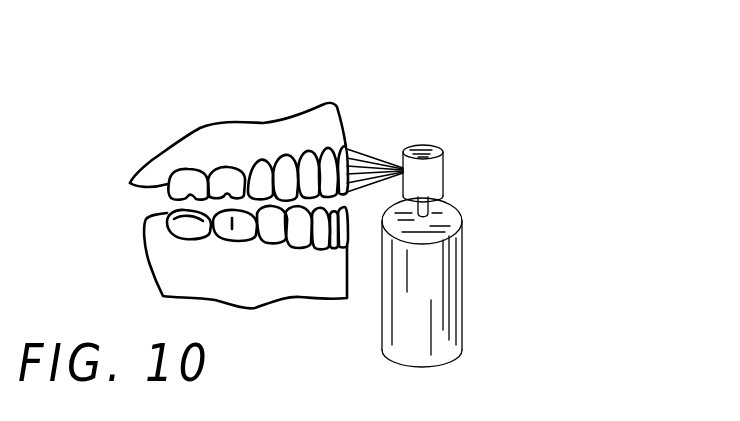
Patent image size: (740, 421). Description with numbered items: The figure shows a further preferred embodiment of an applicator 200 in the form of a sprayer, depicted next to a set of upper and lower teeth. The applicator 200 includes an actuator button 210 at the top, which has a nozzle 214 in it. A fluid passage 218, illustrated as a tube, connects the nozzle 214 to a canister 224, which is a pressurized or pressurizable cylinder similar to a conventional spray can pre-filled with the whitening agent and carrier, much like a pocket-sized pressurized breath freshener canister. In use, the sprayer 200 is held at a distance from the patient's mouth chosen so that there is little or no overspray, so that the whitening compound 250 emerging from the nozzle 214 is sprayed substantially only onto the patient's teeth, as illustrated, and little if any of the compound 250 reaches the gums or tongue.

The whitening compound 250 is at (358, 160).
The nozzle 214 is at (395, 160).
The actuator button 210 is at (443, 176).
The fluid passage 218 is at (433, 208).
The applicator 200 is at (464, 268).
The canister 224 is at (438, 338).